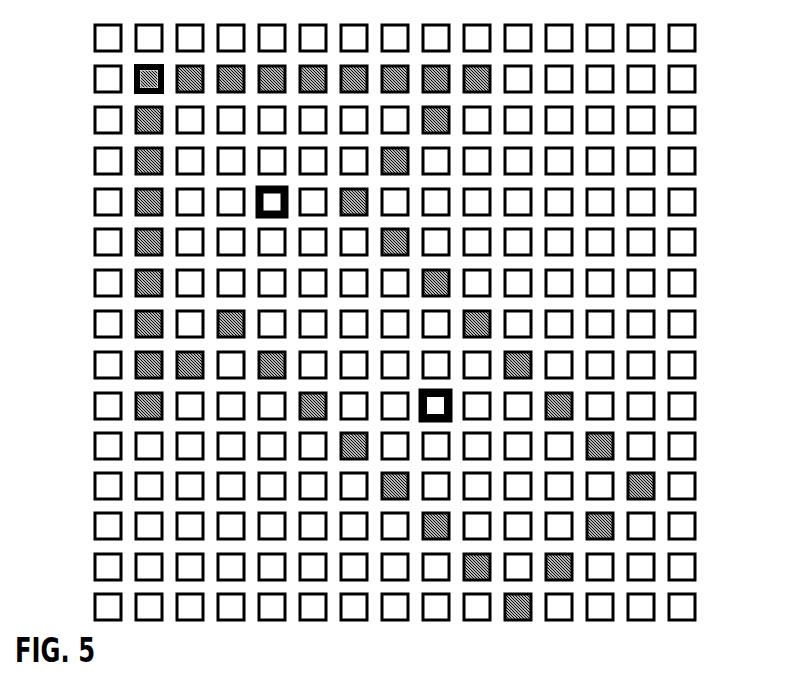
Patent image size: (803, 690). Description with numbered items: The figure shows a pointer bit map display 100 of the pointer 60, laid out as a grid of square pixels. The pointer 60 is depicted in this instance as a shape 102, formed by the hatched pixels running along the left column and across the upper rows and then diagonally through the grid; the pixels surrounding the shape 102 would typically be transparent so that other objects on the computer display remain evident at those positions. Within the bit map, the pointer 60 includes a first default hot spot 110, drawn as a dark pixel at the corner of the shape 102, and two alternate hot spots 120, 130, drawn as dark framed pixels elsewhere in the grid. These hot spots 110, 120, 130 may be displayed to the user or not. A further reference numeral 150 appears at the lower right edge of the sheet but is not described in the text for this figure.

The pointer bit map display 100 is at (78, 112).
The first default hot spot 110 is at (150, 64).
The alternate hot spot 120 is at (270, 186).
The alternate hot spot 130 is at (452, 406).
The shape 102 is at (142, 250).
The pointer 60 is at (133, 348).
The reference numeral 150 is at (740, 689).